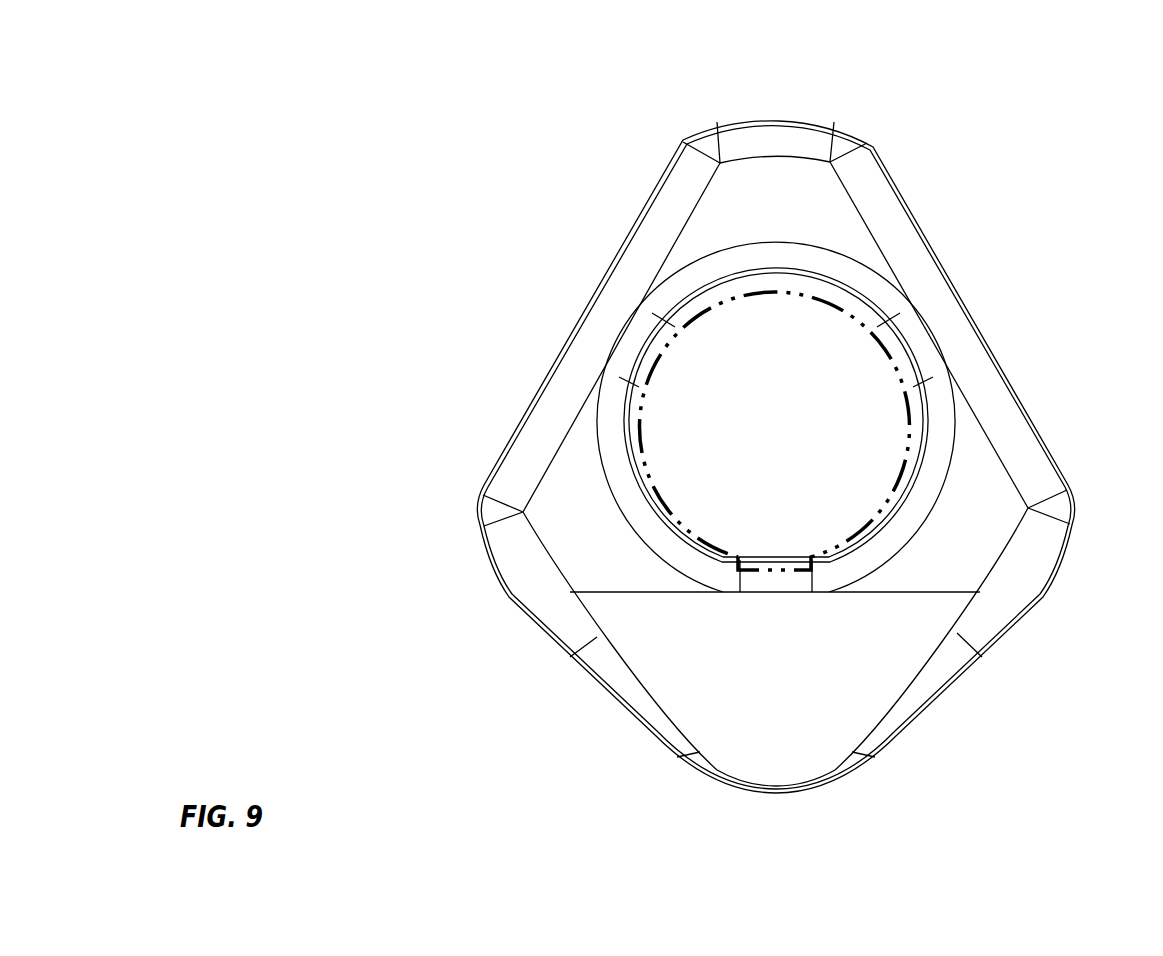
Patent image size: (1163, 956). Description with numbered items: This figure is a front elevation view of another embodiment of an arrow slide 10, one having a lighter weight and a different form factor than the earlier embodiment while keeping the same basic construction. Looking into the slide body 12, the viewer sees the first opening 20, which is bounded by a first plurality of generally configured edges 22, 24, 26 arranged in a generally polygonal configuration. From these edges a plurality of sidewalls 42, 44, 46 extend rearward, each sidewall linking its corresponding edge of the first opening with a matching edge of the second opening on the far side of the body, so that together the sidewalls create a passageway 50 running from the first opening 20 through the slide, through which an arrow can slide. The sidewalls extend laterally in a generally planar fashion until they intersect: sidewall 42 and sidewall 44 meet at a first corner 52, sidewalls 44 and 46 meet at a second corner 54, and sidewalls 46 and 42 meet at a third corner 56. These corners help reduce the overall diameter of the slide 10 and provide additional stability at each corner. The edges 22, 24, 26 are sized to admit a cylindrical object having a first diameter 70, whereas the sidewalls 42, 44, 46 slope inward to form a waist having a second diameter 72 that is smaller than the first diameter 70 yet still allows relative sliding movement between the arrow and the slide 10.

The arrow slide 10 is at (1019, 214).
The slide body 12 is at (898, 187).
The first opening 20 is at (876, 593).
The edge 22 is at (793, 587).
The edge 24 is at (910, 357).
The edge 26 is at (633, 348).
The sidewall 42 is at (733, 563).
The sidewall 44 is at (900, 387).
The sidewall 46 is at (640, 368).
The passageway 50 is at (685, 452).
The first corner 52 is at (917, 523).
The second corner 54 is at (791, 252).
The third corner 56 is at (618, 518).
The first diameter 70 is at (640, 490).
The second diameter 72 is at (703, 308).